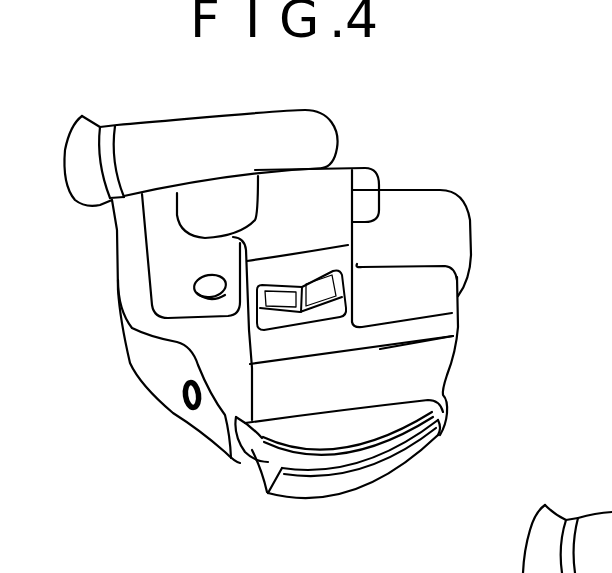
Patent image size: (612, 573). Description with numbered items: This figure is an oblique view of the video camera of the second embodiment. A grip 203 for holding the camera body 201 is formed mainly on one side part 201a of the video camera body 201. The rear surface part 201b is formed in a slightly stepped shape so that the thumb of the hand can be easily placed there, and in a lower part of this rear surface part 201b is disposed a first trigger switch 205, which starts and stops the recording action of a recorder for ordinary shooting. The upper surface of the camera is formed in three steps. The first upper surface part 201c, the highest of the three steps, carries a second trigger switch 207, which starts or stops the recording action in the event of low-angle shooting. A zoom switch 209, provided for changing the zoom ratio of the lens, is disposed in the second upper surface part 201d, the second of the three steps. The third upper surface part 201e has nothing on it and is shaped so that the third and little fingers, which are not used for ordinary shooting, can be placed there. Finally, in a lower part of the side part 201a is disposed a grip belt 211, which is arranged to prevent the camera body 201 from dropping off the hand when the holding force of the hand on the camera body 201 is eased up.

The video camera body 201 is at (492, 245).
The side part 201a is at (342, 380).
The rear surface part 201b is at (173, 390).
The first upper surface part 201c is at (173, 243).
The second upper surface part 201d is at (302, 262).
The third upper surface part 201e is at (433, 307).
The grip 203 is at (417, 378).
The first trigger switch 205 is at (184, 410).
The second trigger switch 207 is at (203, 286).
The zoom switch 209 is at (340, 260).
The grip belt 211 is at (402, 458).